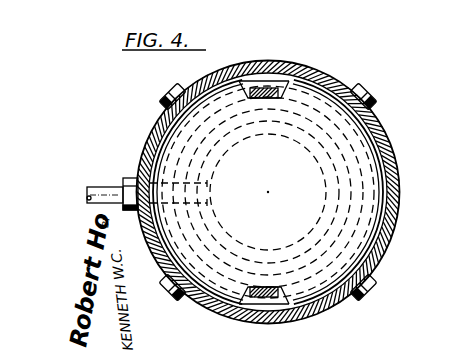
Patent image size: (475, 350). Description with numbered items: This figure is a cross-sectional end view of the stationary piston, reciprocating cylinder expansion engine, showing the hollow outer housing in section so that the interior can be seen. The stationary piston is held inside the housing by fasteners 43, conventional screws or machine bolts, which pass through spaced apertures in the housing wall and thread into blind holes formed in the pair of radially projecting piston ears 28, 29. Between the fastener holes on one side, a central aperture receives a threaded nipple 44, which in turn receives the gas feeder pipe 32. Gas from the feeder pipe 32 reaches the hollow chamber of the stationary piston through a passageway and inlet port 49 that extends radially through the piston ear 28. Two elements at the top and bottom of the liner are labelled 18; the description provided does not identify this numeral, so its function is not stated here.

The lugs / recesses in liner 18 is at (268, 90).
The piston ear 28 is at (145, 150).
The piston ear 29 is at (386, 184).
The gas feeder pipe 32 is at (89, 200).
The fasteners 43 is at (161, 104).
The threaded nipple 44 is at (136, 177).
The inlet port 49 is at (200, 184).